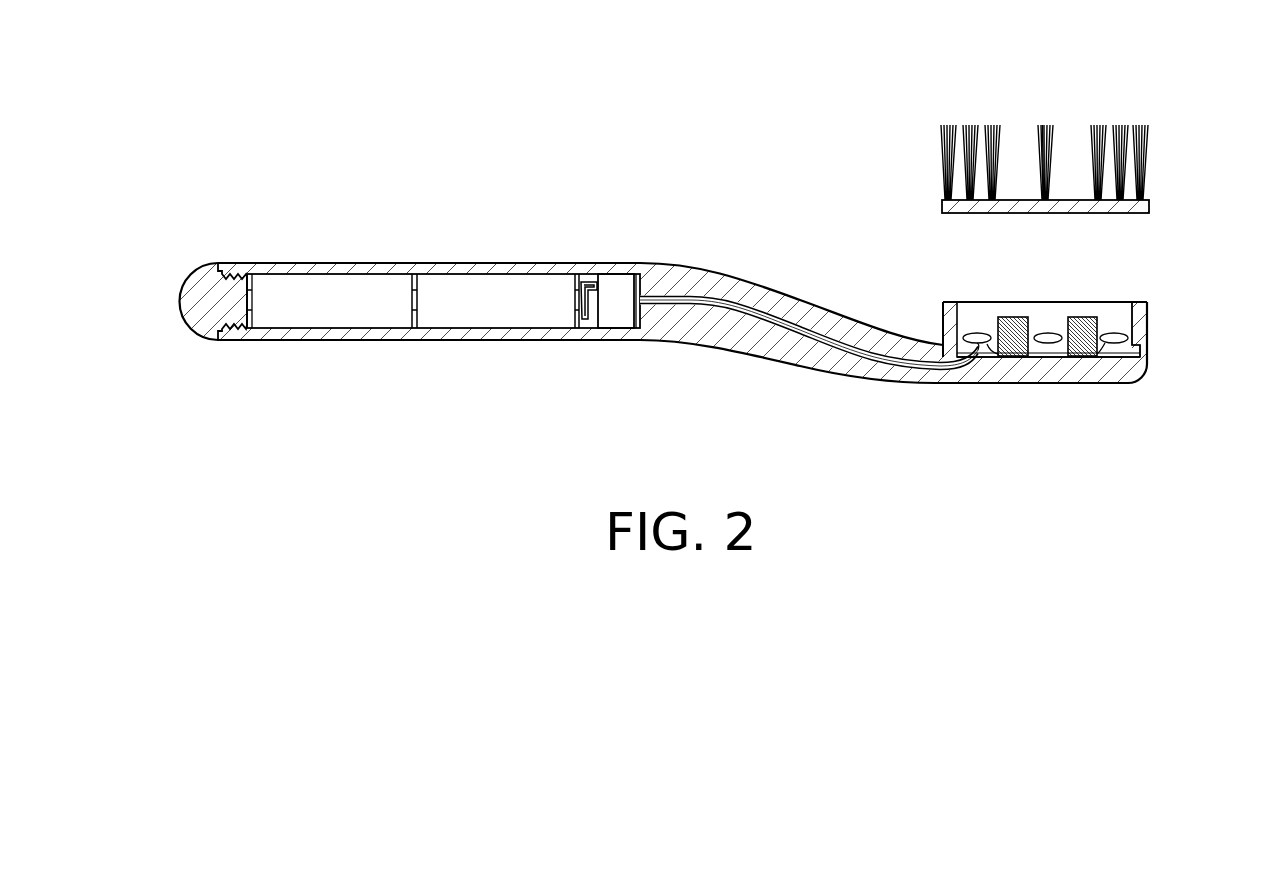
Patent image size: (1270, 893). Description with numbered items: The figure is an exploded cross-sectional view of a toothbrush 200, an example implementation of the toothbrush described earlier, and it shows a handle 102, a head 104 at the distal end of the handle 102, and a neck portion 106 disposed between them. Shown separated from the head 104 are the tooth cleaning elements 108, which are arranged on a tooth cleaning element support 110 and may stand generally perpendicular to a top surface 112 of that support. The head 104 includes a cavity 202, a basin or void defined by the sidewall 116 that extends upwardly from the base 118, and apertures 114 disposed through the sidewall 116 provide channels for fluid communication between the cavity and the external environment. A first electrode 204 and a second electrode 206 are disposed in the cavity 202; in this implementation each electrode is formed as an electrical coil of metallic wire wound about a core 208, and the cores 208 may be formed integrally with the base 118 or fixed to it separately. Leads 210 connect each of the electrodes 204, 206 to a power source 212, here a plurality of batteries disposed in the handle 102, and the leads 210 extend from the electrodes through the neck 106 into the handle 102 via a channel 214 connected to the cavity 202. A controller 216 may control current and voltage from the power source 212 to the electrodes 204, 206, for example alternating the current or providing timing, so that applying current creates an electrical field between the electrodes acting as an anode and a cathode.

The toothbrush 200 is at (298, 208).
The handle 102 is at (337, 268).
The head 104 is at (1150, 392).
The neck portion 106 is at (763, 338).
The tooth cleaning elements 108 is at (1145, 143).
The tooth cleaning element support 110 is at (942, 205).
The top surface 112 is at (1068, 200).
The apertures 114 is at (1052, 345).
The sidewall 116 is at (1150, 320).
The base 118 is at (1088, 370).
The cavity 202 is at (965, 312).
The first electrode 204 is at (975, 352).
The second electrode 206 is at (1135, 365).
The core 208 is at (1085, 322).
The leads 210 is at (670, 310).
The power source 212 is at (512, 290).
The channel 214 is at (745, 302).
The controller 216 is at (612, 290).